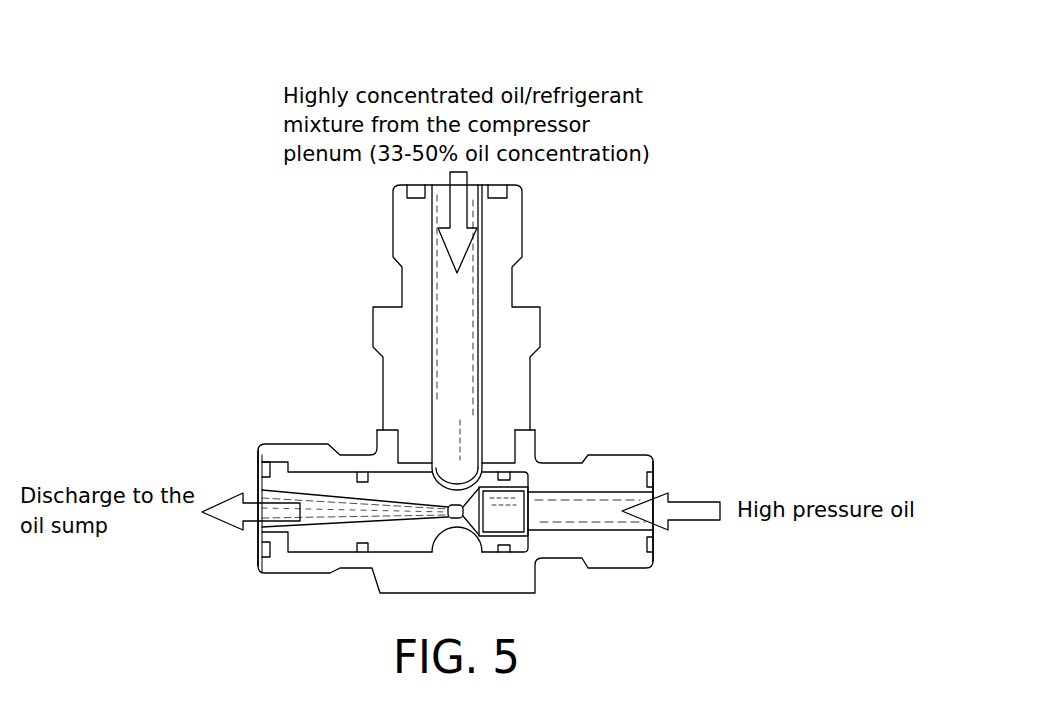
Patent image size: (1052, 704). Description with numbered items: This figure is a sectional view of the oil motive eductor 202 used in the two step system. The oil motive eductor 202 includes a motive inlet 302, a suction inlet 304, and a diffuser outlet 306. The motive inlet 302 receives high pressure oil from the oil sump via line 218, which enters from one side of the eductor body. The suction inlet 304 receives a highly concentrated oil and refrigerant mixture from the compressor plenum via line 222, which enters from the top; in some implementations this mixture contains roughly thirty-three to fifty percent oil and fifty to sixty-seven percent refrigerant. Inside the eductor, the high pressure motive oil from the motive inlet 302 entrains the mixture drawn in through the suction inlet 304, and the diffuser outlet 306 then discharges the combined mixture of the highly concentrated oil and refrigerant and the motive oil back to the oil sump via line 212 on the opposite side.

The oil motive eductor 202 is at (146, 60).
The line 222 is at (468, 202).
The suction inlet 304 is at (455, 342).
The diffuser outlet 306 is at (344, 518).
The motive inlet 302 is at (557, 513).
The line 212 is at (268, 517).
The line 218 is at (690, 520).